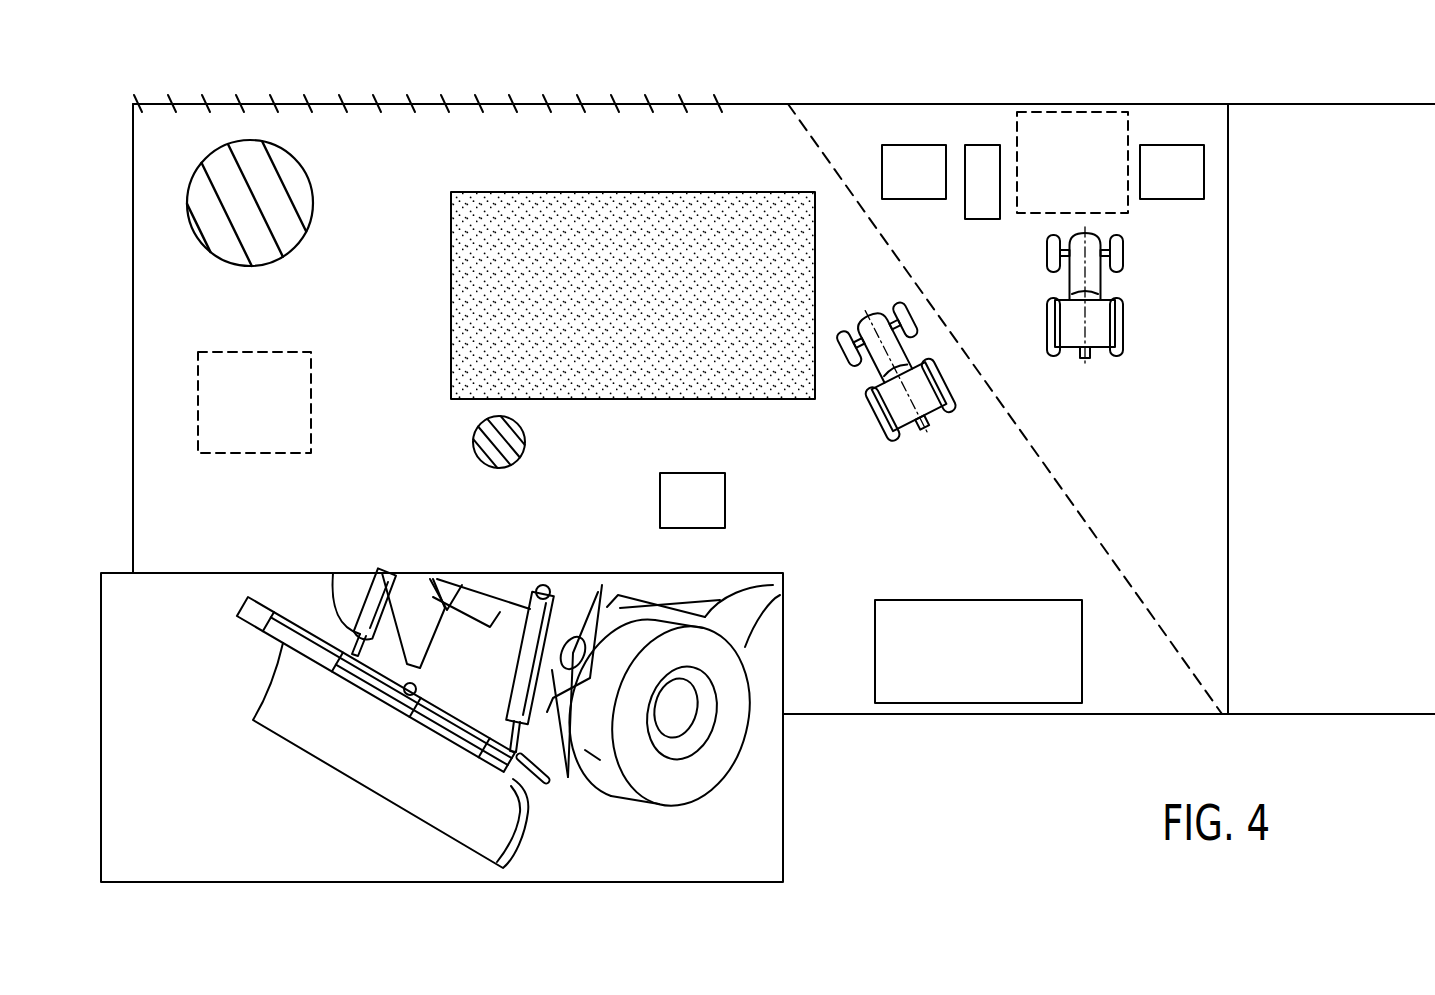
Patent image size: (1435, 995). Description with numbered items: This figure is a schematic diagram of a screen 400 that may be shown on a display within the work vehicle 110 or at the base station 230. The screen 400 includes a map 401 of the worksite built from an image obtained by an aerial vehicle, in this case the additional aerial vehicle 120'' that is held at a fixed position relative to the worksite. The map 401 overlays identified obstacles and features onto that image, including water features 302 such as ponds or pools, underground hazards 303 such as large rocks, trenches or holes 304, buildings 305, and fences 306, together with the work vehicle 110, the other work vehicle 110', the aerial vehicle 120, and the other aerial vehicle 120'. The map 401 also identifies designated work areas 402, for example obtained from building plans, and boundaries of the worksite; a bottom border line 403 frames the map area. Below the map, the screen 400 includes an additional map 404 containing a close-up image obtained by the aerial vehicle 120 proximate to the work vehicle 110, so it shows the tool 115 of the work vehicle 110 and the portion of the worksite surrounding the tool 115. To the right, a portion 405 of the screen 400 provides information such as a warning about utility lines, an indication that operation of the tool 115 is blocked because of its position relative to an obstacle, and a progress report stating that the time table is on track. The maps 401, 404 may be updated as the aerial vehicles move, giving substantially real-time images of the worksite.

The screen 400 is at (932, 78).
The map 401 is at (880, 100).
The designated work areas 402 is at (253, 454).
The display border 403 is at (872, 715).
The additional map 404 is at (465, 573).
The portion 405 is at (1352, 96).
The fences 306 is at (356, 103).
The water features 302 is at (314, 204).
The underground hazards 303 is at (500, 468).
The trenches or holes 304 is at (980, 220).
The buildings 305 is at (640, 192).
The aerial vehicle 120 is at (919, 205).
The other aerial vehicle 120' is at (1176, 205).
The additional aerial vehicle 120'' is at (730, 495).
The work vehicle 110 is at (895, 401).
The other work vehicle 110' is at (1092, 327).
The base station 230 is at (980, 600).
The tool 115 is at (578, 798).